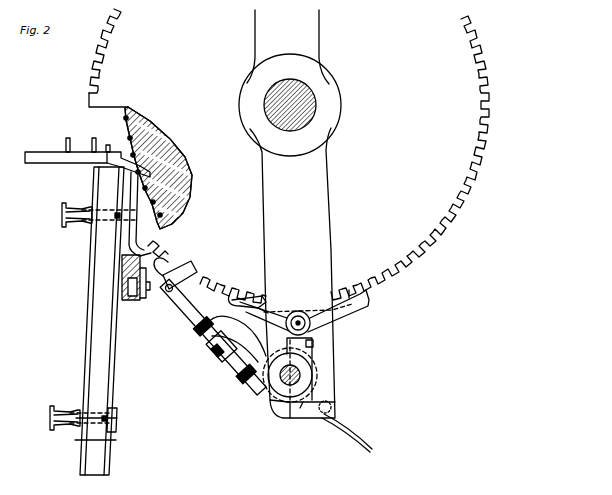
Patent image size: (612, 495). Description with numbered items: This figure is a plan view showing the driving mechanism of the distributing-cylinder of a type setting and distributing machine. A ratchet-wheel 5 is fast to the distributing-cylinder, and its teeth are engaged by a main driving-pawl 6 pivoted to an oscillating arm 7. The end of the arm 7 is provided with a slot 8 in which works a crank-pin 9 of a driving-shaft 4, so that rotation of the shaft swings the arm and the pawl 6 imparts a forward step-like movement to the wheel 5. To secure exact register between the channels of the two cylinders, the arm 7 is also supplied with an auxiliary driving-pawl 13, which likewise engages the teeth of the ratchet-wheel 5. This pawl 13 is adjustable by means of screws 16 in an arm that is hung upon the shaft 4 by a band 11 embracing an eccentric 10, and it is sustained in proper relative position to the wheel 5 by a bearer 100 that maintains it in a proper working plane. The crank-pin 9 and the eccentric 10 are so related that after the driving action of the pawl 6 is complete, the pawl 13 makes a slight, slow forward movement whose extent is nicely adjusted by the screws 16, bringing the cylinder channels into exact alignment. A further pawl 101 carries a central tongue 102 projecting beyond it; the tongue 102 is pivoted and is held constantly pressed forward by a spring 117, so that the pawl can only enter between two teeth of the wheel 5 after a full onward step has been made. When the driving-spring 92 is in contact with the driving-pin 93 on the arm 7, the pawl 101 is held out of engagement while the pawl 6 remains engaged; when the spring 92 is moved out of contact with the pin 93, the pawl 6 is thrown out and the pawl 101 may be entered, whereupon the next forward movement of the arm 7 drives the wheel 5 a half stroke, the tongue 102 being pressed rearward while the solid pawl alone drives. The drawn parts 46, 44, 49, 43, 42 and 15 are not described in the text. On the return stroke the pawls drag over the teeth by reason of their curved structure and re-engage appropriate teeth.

The ratchet-wheel 5 is at (95, 74).
The oscillating arm 7 is at (290, 214).
The rivets / friction shoe 46 is at (131, 154).
The bar 44 is at (128, 175).
The bracket 49 is at (136, 229).
The block 43 is at (123, 263).
The plate 42 is at (136, 300).
The bearer 100 is at (190, 274).
The auxiliary driving-pawl 13 is at (182, 304).
The screws 16 is at (195, 328).
The block 15 is at (221, 346).
The main driving-pawl 6 is at (252, 316).
The spring 117 is at (344, 320).
The pawl 101 is at (361, 304).
The central tongue 102 is at (348, 297).
The crank-pin 9 is at (289, 358).
The driving-spring 92 is at (313, 346).
The eccentric 10 is at (280, 384).
The driving-shaft 4 is at (280, 373).
The band 11 is at (279, 408).
The slot 8 is at (302, 410).
The driving-pin 93 is at (332, 407).